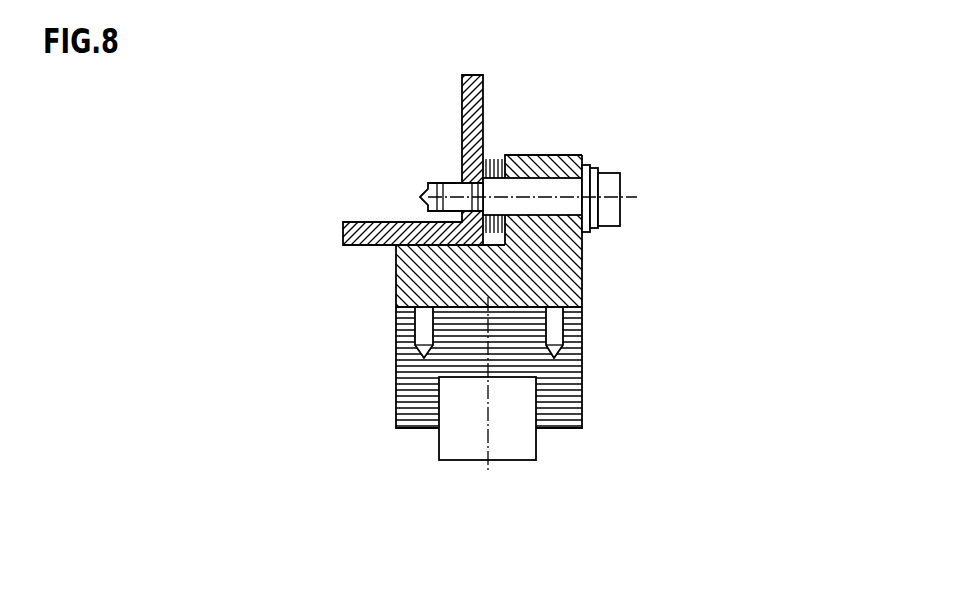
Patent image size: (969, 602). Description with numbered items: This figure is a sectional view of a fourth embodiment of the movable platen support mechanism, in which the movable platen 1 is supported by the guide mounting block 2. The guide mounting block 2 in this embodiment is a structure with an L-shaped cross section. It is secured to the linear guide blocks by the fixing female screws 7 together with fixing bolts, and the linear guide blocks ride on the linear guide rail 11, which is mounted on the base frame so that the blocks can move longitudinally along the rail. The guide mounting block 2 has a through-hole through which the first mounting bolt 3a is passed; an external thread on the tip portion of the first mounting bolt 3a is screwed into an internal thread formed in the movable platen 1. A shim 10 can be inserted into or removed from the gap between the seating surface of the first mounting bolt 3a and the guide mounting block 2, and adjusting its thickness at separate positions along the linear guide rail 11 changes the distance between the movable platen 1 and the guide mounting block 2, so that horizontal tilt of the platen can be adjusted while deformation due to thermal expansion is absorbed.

The movable platen 1 is at (442, 125).
The guide mounting block 2 is at (557, 278).
The first mounting bolt 3a is at (622, 175).
The fixing female screw 7 is at (432, 333).
The shim 10 is at (588, 165).
The linear guide rail 11 is at (512, 448).